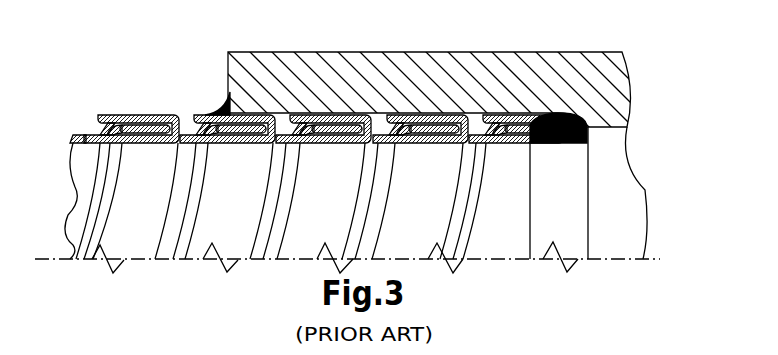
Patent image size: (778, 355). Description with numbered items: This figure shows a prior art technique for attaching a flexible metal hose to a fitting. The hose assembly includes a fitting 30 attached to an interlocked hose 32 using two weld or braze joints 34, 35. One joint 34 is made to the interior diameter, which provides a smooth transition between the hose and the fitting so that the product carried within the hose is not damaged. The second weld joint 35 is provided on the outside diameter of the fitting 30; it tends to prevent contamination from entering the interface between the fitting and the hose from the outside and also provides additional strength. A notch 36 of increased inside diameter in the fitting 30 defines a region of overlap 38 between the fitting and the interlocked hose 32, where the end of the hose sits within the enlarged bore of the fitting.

The fitting 30 is at (610, 98).
The interlocked hose 32 is at (140, 114).
The weld or braze joint 34 is at (582, 207).
The second weld joint 35 is at (218, 104).
The notch 36 is at (508, 113).
The region of overlap 38 is at (228, 51).